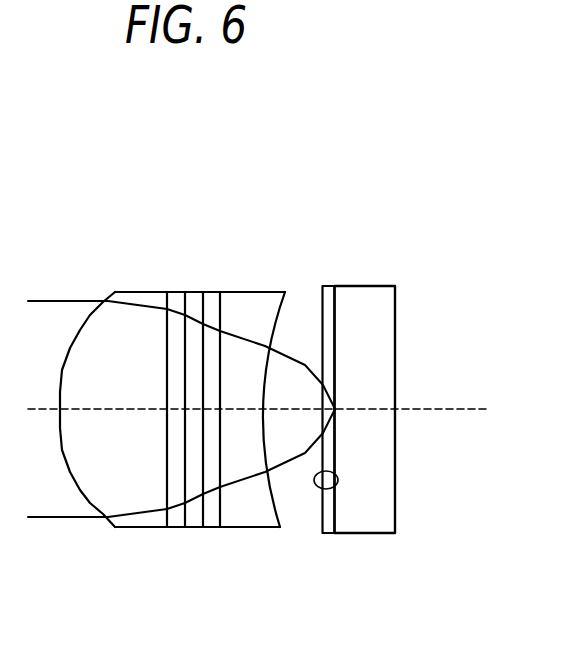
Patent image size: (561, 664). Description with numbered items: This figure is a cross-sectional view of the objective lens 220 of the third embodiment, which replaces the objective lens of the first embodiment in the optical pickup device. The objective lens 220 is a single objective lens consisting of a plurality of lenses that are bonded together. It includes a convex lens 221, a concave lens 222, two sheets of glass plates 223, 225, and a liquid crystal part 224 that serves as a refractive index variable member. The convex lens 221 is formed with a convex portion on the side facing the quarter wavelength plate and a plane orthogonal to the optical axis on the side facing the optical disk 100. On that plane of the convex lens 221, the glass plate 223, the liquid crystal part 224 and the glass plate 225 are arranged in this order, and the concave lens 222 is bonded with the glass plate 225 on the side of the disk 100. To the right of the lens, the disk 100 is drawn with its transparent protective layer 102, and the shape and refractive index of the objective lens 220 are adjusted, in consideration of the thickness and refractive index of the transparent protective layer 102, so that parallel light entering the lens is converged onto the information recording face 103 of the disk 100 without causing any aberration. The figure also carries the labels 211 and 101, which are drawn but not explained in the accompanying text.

The disk 100 is at (400, 229).
The imaging element 101 is at (372, 340).
The transparent protective layer 102 is at (324, 533).
The information recording face 103 is at (336, 474).
The lens 211 is at (106, 541).
The objective lens 220 is at (157, 197).
The convex lens 221 is at (143, 528).
The concave lens 222 is at (257, 528).
The glass plate 223 is at (177, 300).
The liquid crystal part 224 is at (196, 300).
The glass plate 225 is at (213, 300).